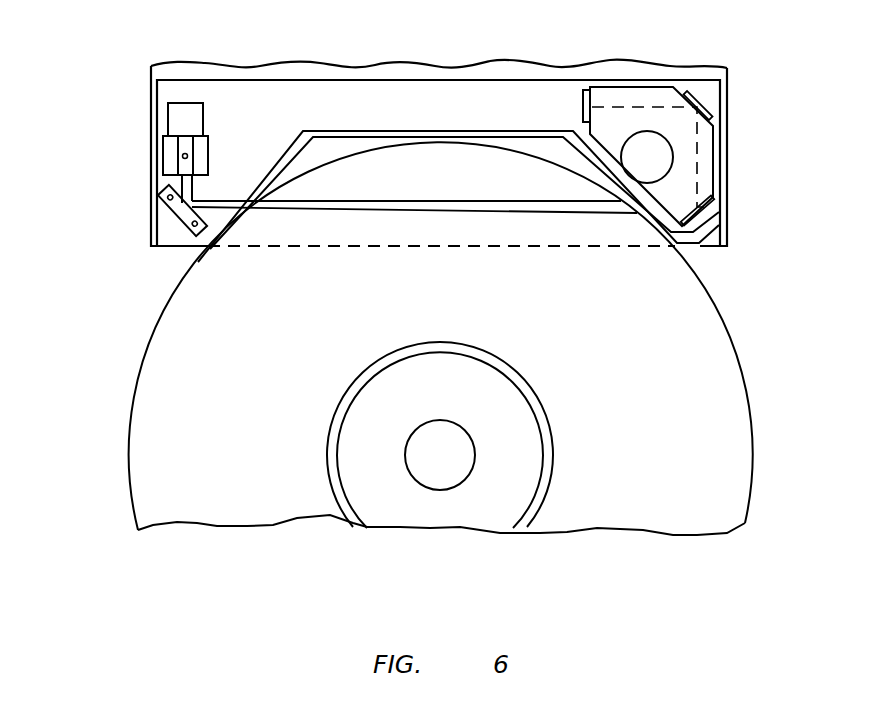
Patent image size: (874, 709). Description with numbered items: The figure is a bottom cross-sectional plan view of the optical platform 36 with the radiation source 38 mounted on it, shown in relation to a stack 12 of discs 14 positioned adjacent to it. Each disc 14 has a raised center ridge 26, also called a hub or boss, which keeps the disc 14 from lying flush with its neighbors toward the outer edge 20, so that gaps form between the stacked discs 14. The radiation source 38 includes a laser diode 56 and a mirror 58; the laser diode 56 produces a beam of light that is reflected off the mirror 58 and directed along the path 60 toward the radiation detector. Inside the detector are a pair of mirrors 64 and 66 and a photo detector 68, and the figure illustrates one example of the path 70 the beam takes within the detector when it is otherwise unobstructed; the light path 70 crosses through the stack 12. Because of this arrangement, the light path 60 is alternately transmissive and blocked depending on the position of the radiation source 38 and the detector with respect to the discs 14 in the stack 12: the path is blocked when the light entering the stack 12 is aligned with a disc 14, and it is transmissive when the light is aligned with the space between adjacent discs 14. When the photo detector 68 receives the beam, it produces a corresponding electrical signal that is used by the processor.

The stack 12 is at (117, 394).
The disc 14 is at (663, 503).
The outer edge 20 is at (747, 388).
The raised center ridge 26 is at (533, 517).
The optical platform 36 is at (518, 98).
The radiation source 38 is at (137, 198).
The laser diode 56 is at (170, 155).
The mirror 58 is at (180, 212).
The path 60 is at (362, 203).
The mirror 64 is at (715, 218).
The mirror 66 is at (707, 110).
The photo detector 68 is at (593, 99).
The path 70 is at (653, 107).